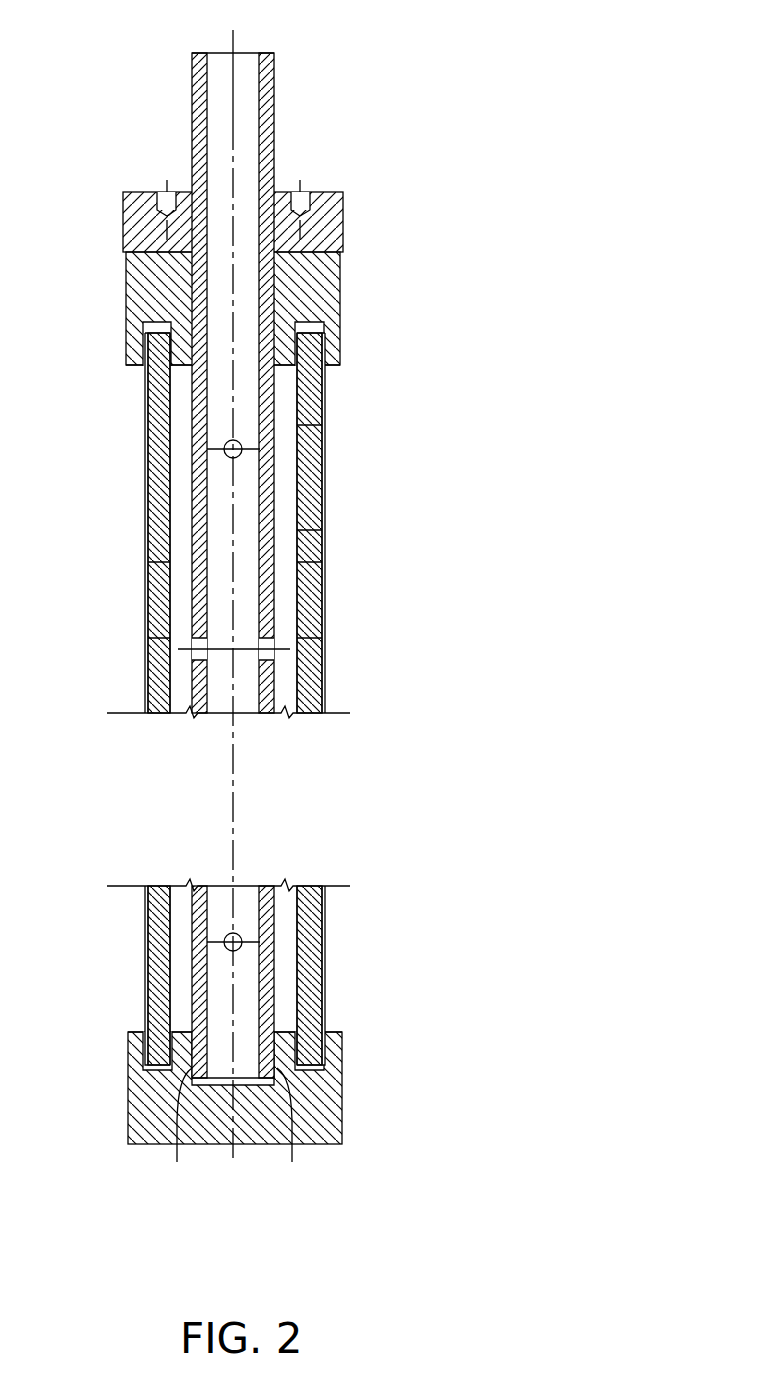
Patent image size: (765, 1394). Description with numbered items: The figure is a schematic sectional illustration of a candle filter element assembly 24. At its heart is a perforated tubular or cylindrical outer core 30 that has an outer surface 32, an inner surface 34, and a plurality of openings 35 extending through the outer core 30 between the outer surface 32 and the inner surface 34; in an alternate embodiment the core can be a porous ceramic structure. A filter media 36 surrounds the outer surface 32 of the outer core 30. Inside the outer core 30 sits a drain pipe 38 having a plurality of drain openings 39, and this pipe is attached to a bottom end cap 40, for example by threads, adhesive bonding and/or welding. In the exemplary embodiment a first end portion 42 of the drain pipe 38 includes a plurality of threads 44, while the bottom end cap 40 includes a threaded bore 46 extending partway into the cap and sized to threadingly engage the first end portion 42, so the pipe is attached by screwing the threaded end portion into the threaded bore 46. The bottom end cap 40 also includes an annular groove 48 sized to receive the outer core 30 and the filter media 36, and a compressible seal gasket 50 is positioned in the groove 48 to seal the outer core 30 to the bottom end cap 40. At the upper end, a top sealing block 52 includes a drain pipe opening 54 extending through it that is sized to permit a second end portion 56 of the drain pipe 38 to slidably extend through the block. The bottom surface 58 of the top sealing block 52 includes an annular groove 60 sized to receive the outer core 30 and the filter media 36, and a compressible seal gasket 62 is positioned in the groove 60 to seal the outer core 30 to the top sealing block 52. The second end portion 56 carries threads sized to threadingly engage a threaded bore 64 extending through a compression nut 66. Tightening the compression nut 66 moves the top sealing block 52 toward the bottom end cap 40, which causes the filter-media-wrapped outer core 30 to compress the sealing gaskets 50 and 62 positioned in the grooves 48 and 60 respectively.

The candle filter element assembly 24 is at (486, 108).
The outer core 30 is at (323, 528).
The outer surface 32 is at (322, 475).
The inner surface 34 is at (325, 432).
The openings 35 is at (153, 562).
The filter media 36 is at (325, 397).
The drain pipe 38 is at (276, 53).
The drain openings 39 is at (197, 645).
The bottom end cap 40 is at (342, 1098).
The first end portion 42 is at (279, 1007).
The threads 44 is at (295, 1132).
The threaded bore 46 is at (173, 1132).
The annular groove 48 is at (152, 1075).
The compressible seal gasket 50 is at (143, 1068).
The top sealing block 52 is at (340, 292).
The drain pipe opening 54 is at (280, 283).
The second end portion 56 is at (296, 159).
The bottom surface 58 is at (136, 368).
The annular groove 60 is at (126, 333).
The compressible seal gasket 62 is at (325, 328).
The threaded bore 64 is at (182, 196).
The compression nut 66 is at (123, 222).